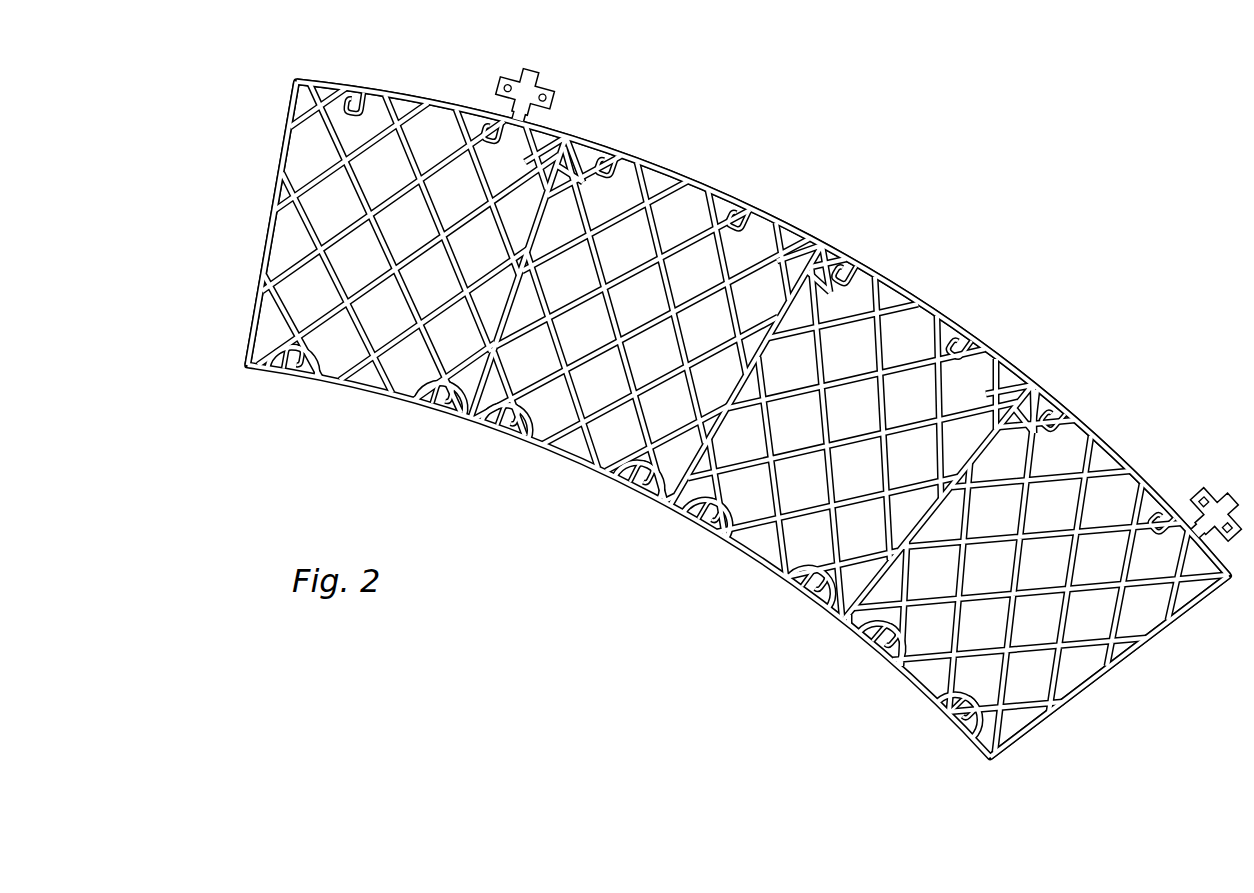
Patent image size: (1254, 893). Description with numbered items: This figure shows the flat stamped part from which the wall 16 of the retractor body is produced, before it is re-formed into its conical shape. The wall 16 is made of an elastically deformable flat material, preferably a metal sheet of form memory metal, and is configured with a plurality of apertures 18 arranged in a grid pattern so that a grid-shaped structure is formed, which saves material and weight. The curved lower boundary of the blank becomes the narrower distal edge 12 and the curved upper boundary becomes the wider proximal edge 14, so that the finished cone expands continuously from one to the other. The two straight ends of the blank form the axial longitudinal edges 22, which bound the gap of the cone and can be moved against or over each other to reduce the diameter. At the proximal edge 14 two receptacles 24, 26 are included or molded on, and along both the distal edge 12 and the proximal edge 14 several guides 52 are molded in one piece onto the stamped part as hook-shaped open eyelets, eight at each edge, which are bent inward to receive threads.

The distal lower edge 12 is at (574, 466).
The proximal upper edge 14 is at (657, 166).
The wall 16 is at (817, 264).
The apertures 18 is at (905, 343).
The axial longitudinal edges 22 is at (270, 233).
The first receptacle 24 is at (532, 86).
The second receptacle 26 is at (1210, 486).
The guides 52 is at (358, 100).